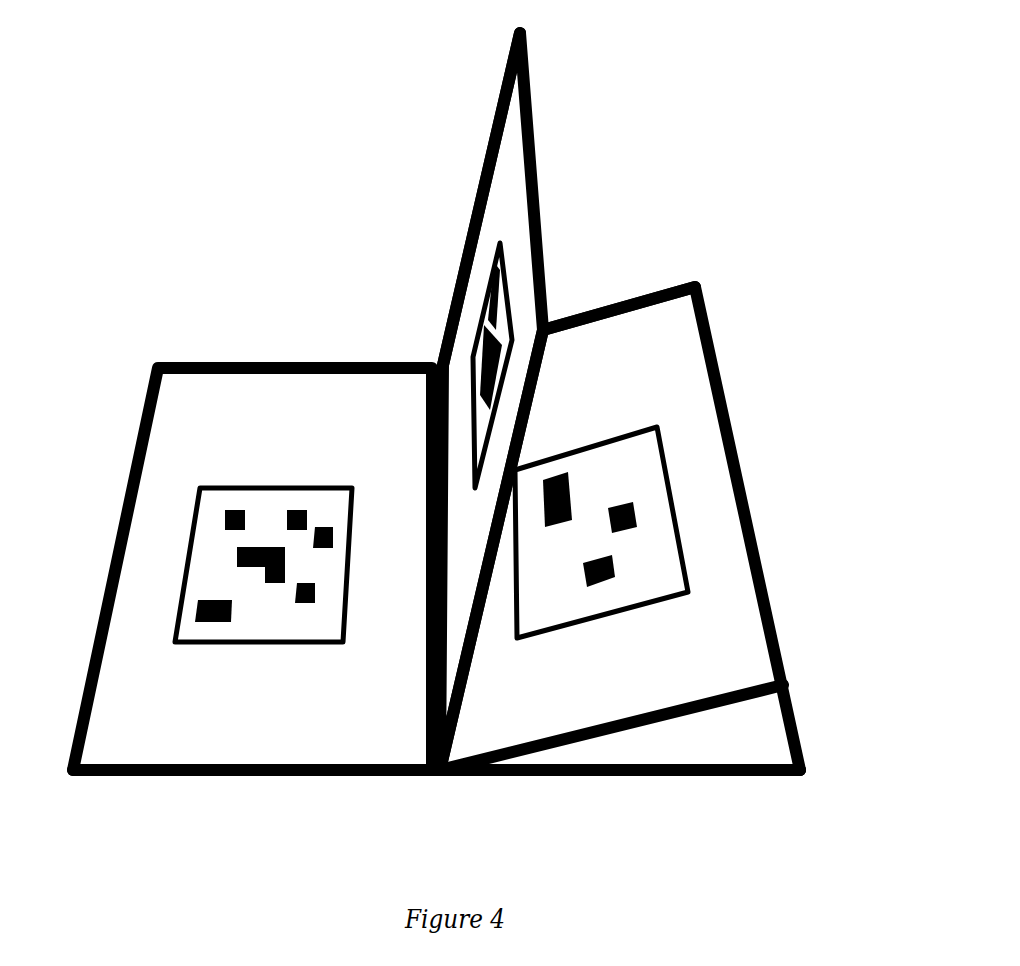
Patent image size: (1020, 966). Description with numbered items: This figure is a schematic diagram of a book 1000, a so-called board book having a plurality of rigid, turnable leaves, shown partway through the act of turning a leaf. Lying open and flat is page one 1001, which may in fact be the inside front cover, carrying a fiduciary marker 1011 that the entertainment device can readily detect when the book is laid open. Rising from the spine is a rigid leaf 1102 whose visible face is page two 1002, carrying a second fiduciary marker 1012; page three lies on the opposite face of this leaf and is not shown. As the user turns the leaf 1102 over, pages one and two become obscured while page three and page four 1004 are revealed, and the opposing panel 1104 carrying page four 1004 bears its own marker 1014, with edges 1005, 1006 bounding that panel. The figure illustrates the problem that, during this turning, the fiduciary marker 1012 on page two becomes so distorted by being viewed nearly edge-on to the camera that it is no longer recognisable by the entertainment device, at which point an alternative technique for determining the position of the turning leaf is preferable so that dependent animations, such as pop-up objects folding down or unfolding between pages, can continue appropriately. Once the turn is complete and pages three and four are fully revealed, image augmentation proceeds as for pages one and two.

The book 1000 is at (258, 831).
The page 1 1001 is at (252, 569).
The page 2 1002 is at (514, 168).
The page 4 1004 is at (620, 528).
The fold edge of third panel 1005 is at (763, 710).
The bottom edge of third panel 1006 is at (765, 750).
The fiduciary marker 1011 is at (185, 530).
The fiduciary marker 1012 is at (468, 315).
The third fiducial marker 1014 is at (683, 492).
The rigid leaf 1102 is at (472, 147).
The second panel surface plane 1104 is at (622, 276).